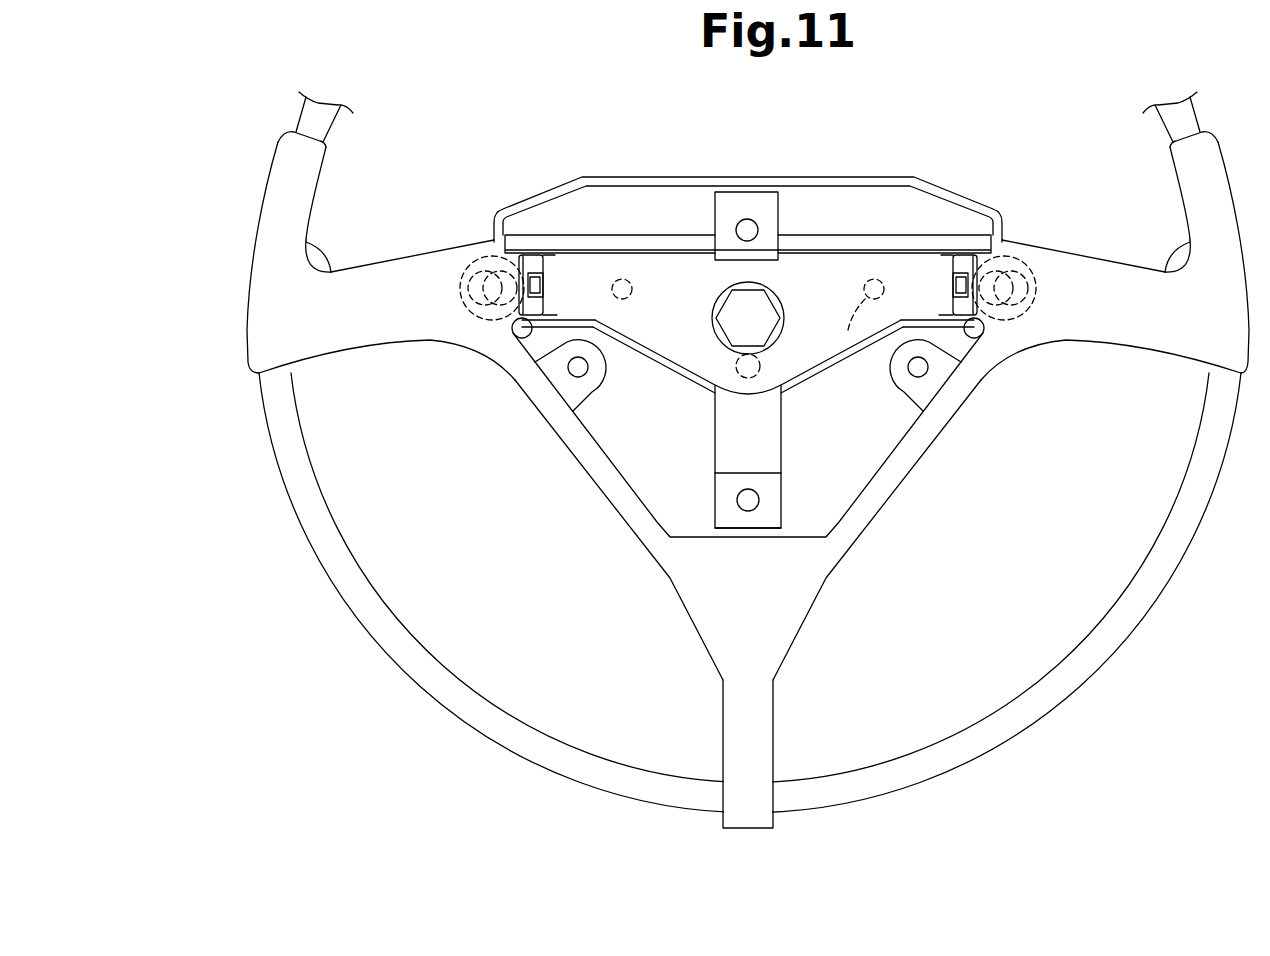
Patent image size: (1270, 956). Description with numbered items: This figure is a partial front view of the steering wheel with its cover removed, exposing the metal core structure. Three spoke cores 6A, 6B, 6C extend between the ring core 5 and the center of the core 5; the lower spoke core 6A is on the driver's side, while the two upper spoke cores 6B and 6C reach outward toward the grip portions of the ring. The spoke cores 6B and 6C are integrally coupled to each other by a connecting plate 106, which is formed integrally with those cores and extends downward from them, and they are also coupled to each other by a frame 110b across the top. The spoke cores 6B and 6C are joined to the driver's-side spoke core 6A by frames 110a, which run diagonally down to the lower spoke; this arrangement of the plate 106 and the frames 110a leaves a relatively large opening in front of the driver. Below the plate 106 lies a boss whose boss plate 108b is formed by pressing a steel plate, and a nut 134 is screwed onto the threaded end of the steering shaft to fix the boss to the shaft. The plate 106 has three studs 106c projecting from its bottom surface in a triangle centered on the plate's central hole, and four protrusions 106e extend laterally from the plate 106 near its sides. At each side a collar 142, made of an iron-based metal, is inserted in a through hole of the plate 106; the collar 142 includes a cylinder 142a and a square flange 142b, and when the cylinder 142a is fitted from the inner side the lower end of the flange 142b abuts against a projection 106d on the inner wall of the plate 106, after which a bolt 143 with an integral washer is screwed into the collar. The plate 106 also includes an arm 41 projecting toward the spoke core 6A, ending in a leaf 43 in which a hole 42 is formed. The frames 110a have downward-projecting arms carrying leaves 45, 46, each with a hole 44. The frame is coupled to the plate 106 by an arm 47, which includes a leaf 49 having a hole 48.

The ring core 5 is at (1065, 657).
The spoke core 6A is at (777, 723).
The spoke core 6B is at (340, 360).
The spoke core 6C is at (1140, 343).
The arm 41 is at (782, 458).
The hole 42 is at (737, 497).
The leaf 43 is at (779, 510).
The hole 44 is at (582, 368).
The leaf 45 is at (932, 388).
The leaf 46 is at (587, 384).
The arm 47 is at (781, 222).
The hole 48 is at (746, 220).
The leaf 49 is at (725, 208).
The connecting plate 106 is at (818, 370).
The stud 106c is at (631, 302).
The projection 106d is at (540, 276).
The protrusion 106e is at (572, 319).
The boss plate 108b is at (647, 357).
The frame 110a is at (588, 472).
The frame 110b is at (796, 177).
The nut 134 is at (752, 300).
The collar 142 is at (499, 426).
The cylinder 142a is at (500, 322).
The square flange 142b is at (513, 330).
The bolt 143 is at (472, 266).